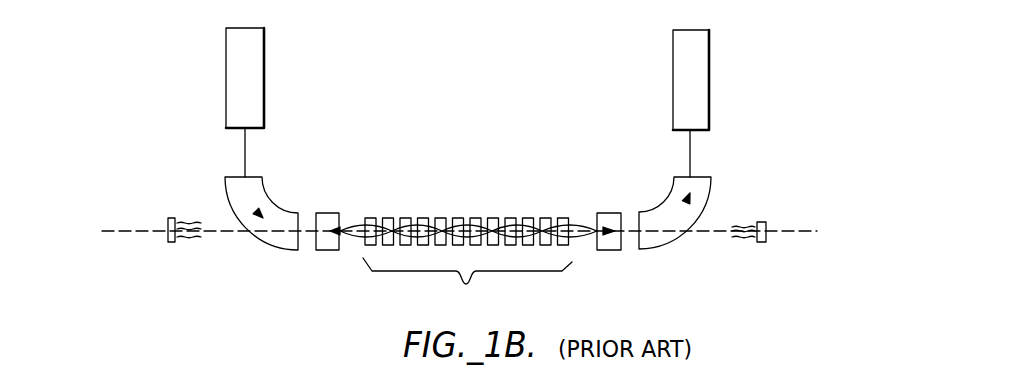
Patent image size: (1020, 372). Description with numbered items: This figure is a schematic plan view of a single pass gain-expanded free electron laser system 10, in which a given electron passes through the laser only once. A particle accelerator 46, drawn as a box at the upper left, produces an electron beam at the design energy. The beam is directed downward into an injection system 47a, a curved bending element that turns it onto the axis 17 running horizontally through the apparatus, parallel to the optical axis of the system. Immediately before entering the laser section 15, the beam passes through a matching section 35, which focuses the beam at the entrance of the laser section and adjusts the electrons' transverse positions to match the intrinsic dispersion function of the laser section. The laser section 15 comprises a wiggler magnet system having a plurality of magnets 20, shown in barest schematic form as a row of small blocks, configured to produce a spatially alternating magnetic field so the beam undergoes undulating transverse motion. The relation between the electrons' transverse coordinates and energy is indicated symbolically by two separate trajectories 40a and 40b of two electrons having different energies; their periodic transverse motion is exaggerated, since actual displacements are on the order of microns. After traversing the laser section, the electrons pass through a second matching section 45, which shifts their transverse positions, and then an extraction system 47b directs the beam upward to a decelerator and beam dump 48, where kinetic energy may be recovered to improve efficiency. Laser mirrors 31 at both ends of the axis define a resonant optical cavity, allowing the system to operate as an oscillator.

The laser system 10 is at (613, 279).
The laser section 15 is at (466, 284).
The axis 17 is at (795, 231).
The magnets 20 is at (459, 214).
The laser mirrors 31 is at (173, 243).
The matching section 35 is at (327, 212).
The trajectory 40a is at (348, 227).
The trajectory 40b is at (353, 245).
The second matching section 45 is at (606, 212).
The particle accelerator 46 is at (226, 60).
The injection system 47a is at (270, 197).
The extraction system 47b is at (706, 196).
The decelerator and beam dump 48 is at (673, 60).